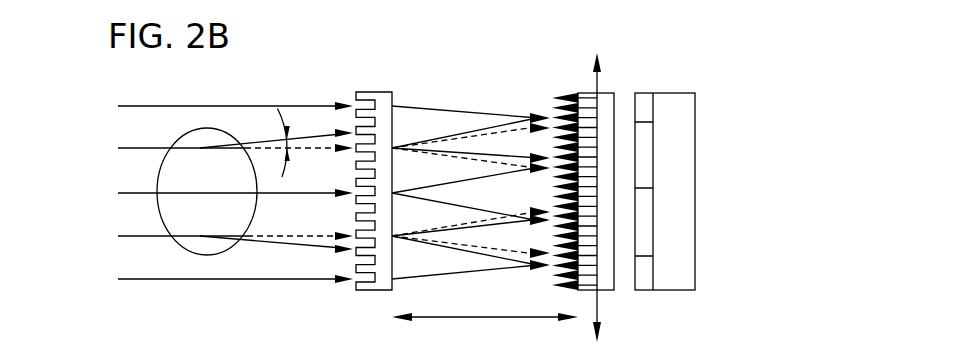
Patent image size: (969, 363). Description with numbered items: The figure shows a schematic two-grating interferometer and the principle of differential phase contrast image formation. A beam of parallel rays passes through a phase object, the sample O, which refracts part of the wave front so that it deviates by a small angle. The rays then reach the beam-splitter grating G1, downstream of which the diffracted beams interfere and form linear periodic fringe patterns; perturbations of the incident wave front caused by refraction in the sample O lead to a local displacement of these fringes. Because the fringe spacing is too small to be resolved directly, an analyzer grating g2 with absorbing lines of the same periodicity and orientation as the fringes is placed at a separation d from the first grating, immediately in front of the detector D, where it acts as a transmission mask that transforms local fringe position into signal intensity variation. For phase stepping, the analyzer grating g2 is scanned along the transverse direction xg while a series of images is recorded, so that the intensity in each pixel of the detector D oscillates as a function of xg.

The beam-splitter grating G1 is at (382, 100).
The analyzer grating g2 is at (607, 283).
The detector D is at (674, 100).
The sample O is at (183, 249).
The distance between gratings d is at (485, 306).
The transverse direction xg is at (582, 197).